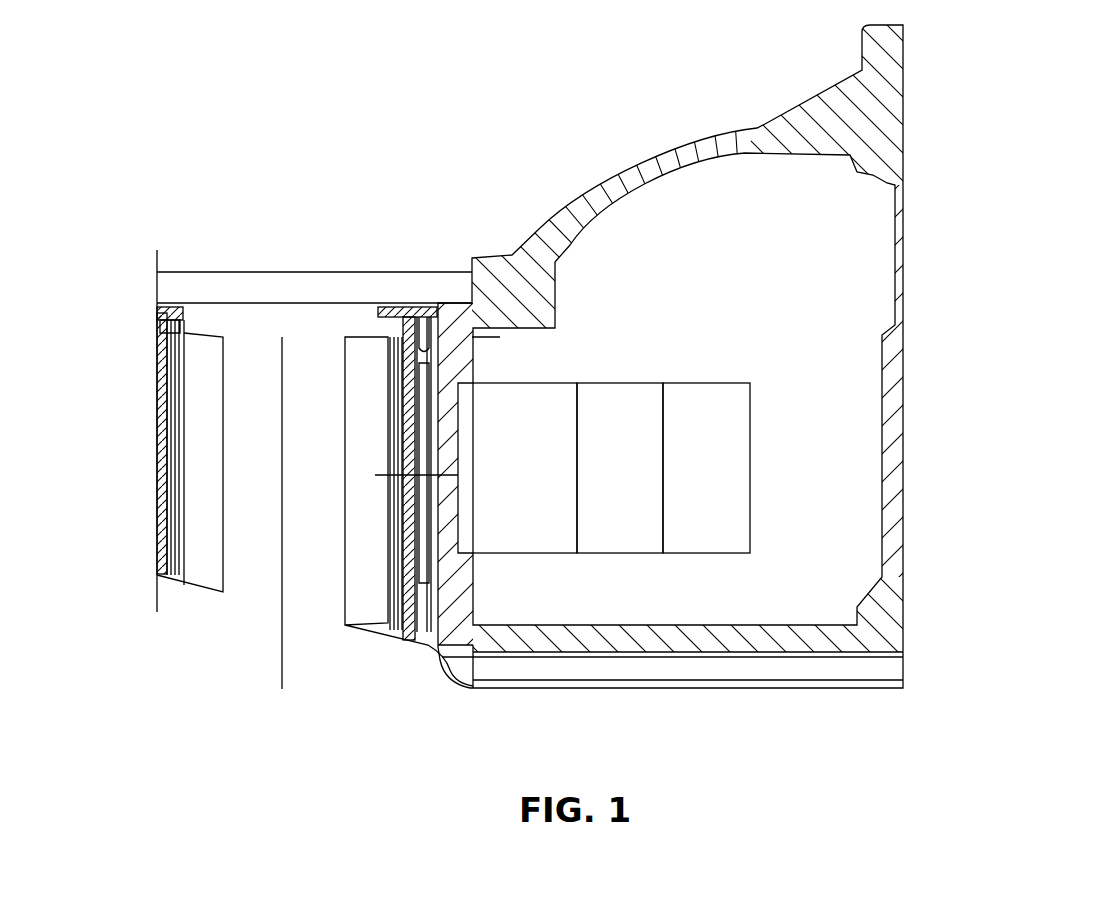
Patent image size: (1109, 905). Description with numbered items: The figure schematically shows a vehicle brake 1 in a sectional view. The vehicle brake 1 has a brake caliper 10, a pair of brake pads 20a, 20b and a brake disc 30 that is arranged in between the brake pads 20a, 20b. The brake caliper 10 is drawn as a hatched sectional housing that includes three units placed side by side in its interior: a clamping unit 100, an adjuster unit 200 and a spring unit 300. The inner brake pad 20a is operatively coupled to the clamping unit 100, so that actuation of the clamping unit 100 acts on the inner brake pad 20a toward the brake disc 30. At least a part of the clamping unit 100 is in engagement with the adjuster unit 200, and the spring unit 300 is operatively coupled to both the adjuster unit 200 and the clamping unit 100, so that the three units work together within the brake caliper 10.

The vehicle brake 1 is at (554, 452).
The brake caliper 10 is at (659, 628).
The inner brake pad 20a is at (375, 597).
The brake pad 20b is at (206, 563).
The brake disc 30 is at (290, 347).
The clamping unit 100 is at (545, 400).
The adjuster unit 200 is at (677, 400).
The spring unit 300 is at (607, 400).